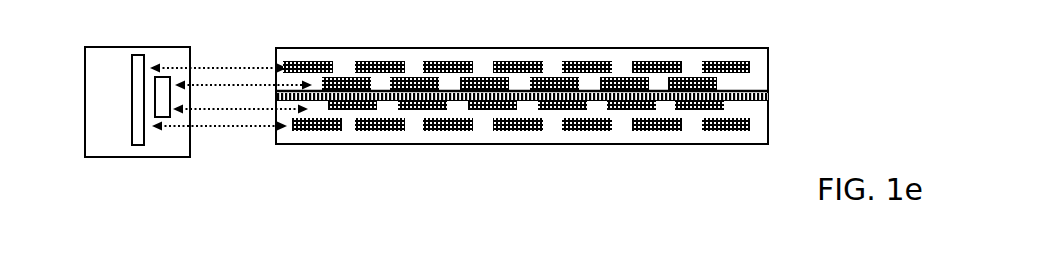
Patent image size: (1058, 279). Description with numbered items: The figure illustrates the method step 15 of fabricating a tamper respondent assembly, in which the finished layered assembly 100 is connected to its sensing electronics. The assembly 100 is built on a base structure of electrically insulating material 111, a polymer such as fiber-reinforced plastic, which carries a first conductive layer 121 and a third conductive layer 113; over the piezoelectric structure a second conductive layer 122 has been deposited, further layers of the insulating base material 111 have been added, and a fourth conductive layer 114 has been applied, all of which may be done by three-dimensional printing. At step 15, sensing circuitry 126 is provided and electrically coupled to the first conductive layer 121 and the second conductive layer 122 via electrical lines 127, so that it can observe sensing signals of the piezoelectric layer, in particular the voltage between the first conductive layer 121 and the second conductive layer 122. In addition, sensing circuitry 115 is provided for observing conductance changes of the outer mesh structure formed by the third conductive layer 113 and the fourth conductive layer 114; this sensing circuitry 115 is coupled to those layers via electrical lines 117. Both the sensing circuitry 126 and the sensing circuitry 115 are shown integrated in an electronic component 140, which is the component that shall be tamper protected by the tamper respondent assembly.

The step 15 is at (54, 114).
The multilayer optical device 100 is at (889, 259).
The electrically insulating material 111 is at (555, 132).
The third conductive layer 113 is at (390, 125).
The fourth conductive layer 114 is at (733, 65).
The sensing circuitry 115 is at (143, 140).
The electrical lines 117 is at (205, 67).
The first conductive layer 121 is at (725, 107).
The second conductive layer 122 is at (717, 80).
The sensing circuitry 126 is at (166, 78).
The electrical lines 127 is at (250, 106).
The electronic component 140 is at (115, 147).